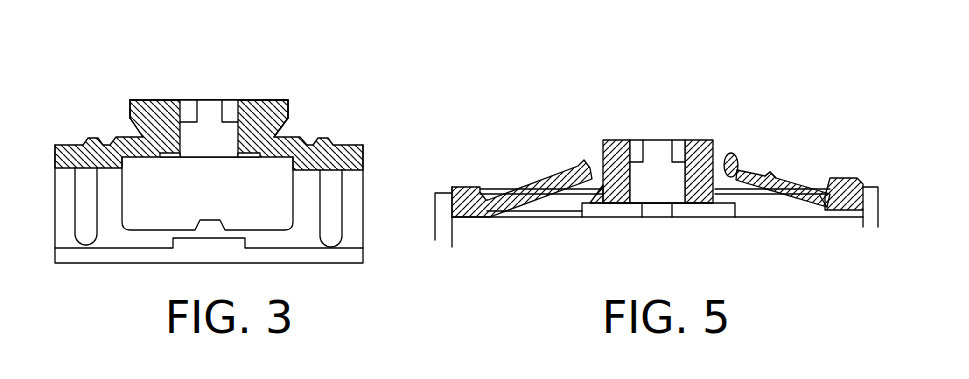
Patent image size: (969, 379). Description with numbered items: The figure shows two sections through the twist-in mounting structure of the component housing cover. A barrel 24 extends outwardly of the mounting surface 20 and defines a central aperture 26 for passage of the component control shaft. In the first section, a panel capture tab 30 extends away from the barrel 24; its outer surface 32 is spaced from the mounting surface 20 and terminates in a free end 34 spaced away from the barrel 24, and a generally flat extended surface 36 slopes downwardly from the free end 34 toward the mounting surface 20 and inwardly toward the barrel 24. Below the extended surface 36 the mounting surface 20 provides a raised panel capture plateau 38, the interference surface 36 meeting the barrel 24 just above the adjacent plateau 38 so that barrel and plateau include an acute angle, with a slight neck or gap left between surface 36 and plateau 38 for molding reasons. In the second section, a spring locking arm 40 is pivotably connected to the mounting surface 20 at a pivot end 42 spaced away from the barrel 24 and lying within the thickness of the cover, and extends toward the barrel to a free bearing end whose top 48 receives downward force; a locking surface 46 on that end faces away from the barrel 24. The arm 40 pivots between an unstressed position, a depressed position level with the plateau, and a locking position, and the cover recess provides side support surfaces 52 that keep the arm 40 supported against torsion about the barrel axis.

In FIG. 3, the mounting surface 20 is at (345, 140).
In FIG. 5, the mounting surface 20 is at (840, 180).
In FIG. 5, the barrel 24 is at (603, 148).
In FIG. 3, the central aperture 26 is at (207, 112).
In FIG. 5, the central aperture 26 is at (658, 152).
In FIG. 3, the panel capture tab 30 is at (118, 102).
In FIG. 3, the outer surface 32 is at (258, 101).
In FIG. 3, the free end 34 is at (288, 106).
In FIG. 3, the extended surface 36 is at (133, 127).
In FIG. 3, the panel capture plateau 38 is at (278, 137).
In FIG. 5, the spring locking arm 40 is at (772, 206).
In FIG. 5, the pivot end 42 is at (827, 210).
In FIG. 5, the locking surface 46 is at (742, 171).
In FIG. 5, the top of free bearing end 48 is at (730, 153).
In FIG. 5, the side support surface 52 is at (537, 212).